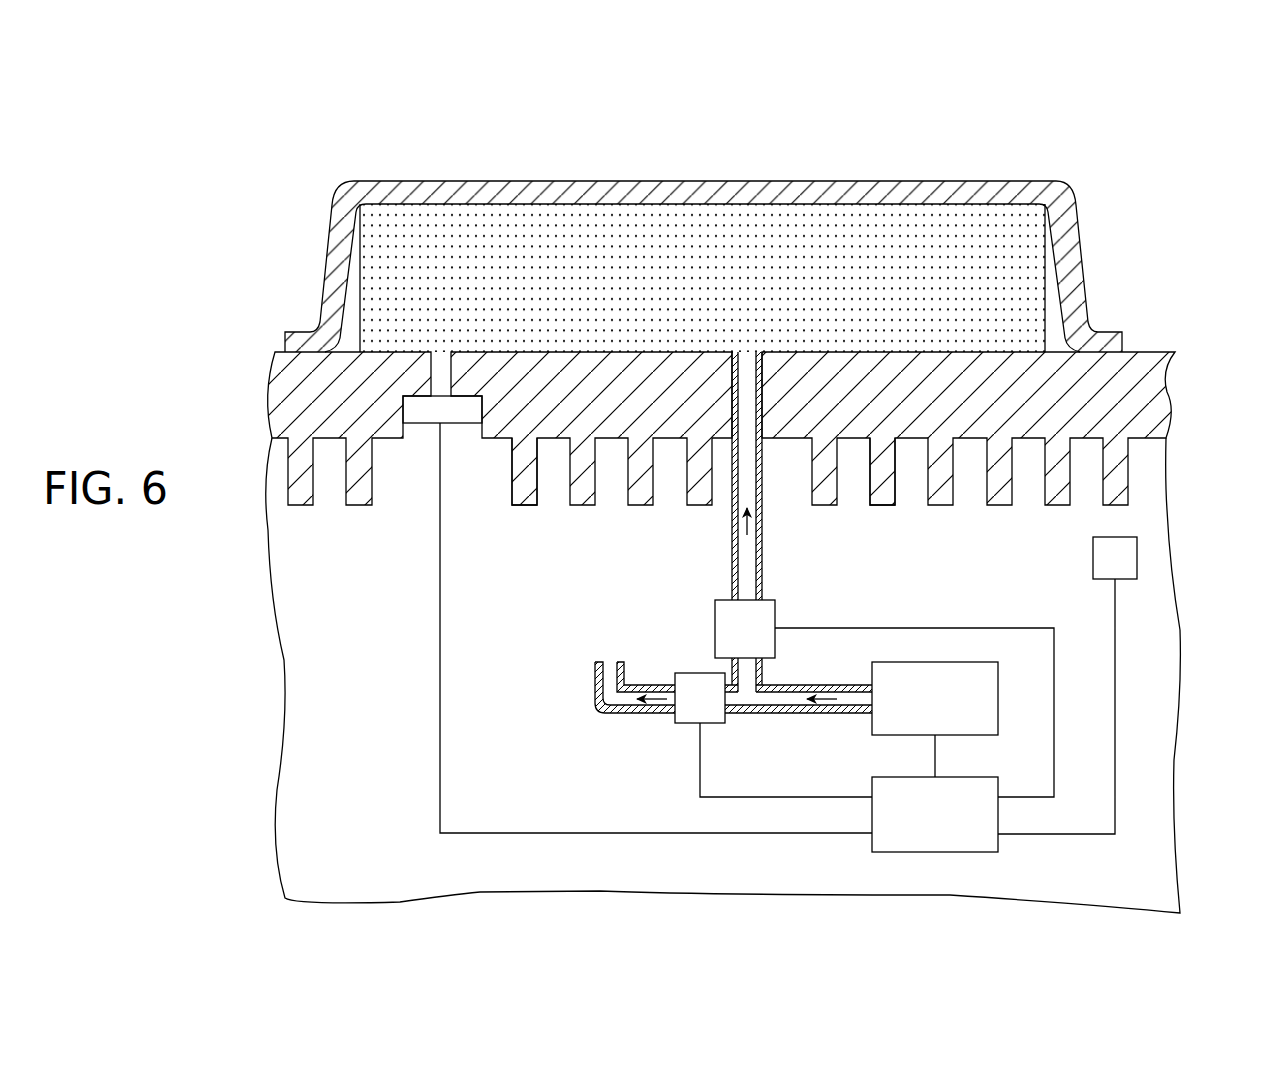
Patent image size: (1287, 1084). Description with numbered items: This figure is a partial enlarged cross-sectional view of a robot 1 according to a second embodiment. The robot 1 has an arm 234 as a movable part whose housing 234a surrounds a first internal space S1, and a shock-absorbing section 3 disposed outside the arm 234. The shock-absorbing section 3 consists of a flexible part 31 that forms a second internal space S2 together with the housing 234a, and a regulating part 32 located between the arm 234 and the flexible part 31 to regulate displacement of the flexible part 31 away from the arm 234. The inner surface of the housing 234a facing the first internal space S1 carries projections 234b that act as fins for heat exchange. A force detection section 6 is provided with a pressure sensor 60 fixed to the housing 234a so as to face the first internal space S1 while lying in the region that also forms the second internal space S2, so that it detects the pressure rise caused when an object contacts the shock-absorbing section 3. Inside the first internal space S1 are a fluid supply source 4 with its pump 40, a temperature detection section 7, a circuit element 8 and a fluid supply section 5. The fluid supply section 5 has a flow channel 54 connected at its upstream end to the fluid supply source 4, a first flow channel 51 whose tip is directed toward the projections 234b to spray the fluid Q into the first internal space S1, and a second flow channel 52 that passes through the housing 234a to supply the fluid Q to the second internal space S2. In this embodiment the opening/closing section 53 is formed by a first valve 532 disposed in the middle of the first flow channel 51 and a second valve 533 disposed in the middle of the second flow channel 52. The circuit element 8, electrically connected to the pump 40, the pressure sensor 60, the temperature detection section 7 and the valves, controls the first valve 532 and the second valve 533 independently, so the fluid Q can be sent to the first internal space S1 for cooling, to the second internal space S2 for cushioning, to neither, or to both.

The robot 1 is at (1103, 126).
The shock-absorbing section 3 is at (703, 221).
The flexible part 31 is at (638, 192).
The regulating part 32 is at (560, 226).
The second internal space S2 is at (742, 232).
The arm 234 is at (1153, 352).
The housing 234a is at (672, 420).
The projections 234b is at (587, 505).
The pressure sensor 60 is at (455, 410).
The force detection section 6 is at (637, 614).
The second flow channel 52 is at (762, 560).
The flow channel 54 is at (782, 713).
The first flow channel 51 is at (655, 685).
The fluid Q is at (830, 690).
The first valve 532 is at (715, 612).
The second valve 533 is at (692, 725).
The opening/closing section 53 is at (670, 705).
The fluid supply section 5 is at (665, 735).
The pump 40 is at (960, 662).
The fluid supply source 4 is at (953, 660).
The circuit element 8 is at (945, 852).
The temperature detection section 7 is at (1137, 556).
The first internal space S1 is at (1160, 660).